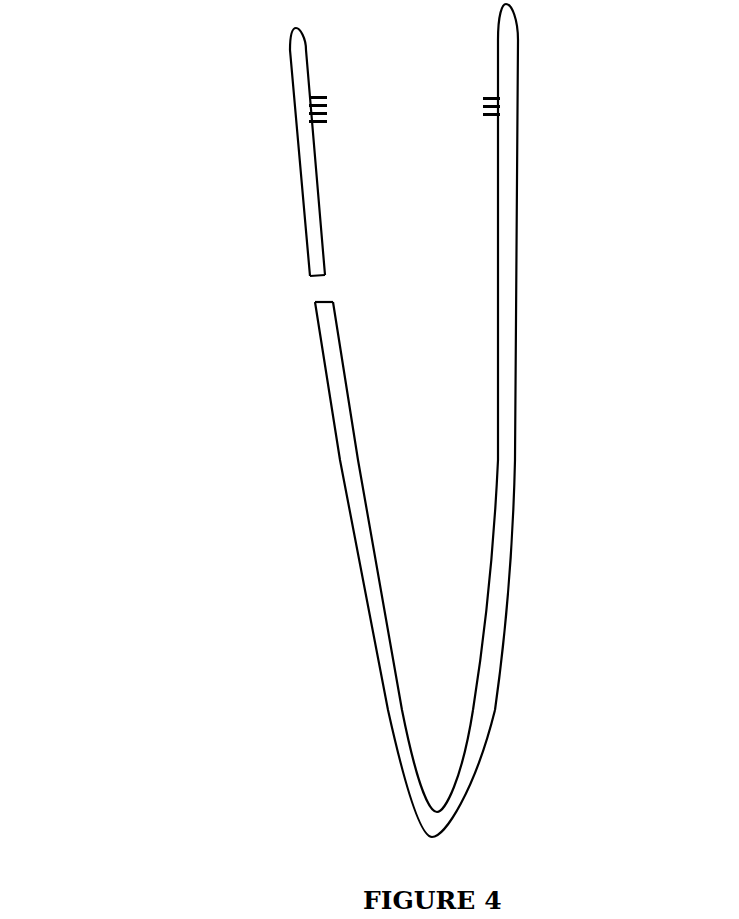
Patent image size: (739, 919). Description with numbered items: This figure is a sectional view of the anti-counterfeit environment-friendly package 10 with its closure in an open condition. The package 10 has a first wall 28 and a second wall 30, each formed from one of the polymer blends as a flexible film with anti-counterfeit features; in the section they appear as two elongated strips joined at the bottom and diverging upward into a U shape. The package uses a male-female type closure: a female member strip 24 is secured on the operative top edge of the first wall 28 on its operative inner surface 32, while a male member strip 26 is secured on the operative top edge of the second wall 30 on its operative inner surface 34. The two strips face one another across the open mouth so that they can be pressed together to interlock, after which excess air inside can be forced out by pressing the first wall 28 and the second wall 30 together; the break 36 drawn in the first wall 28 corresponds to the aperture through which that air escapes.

The anti-counterfeit environment-friendly package 10 is at (222, 180).
The female member strip 24 is at (323, 88).
The male member strip 26 is at (482, 86).
The first wall 28 is at (316, 365).
The second wall 30 is at (530, 352).
The operative inner surface of the first wall 32 is at (358, 410).
The operative inner surface of the second wall 34 is at (487, 212).
The gap / break in first arm 36 is at (297, 292).